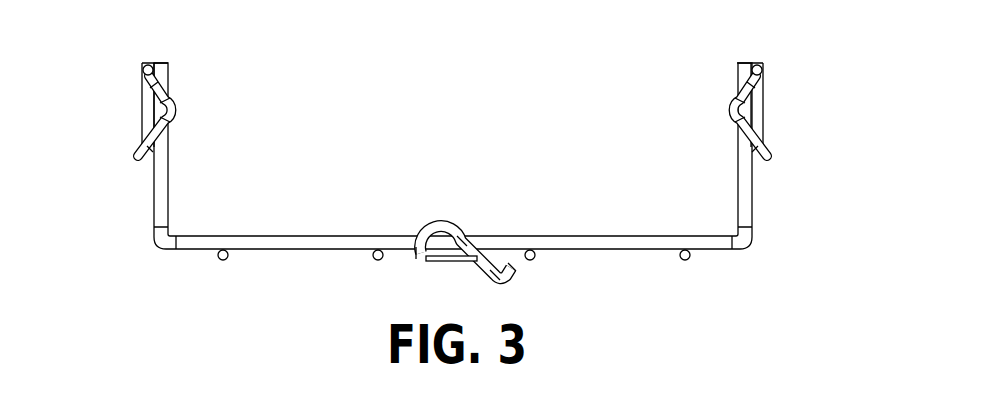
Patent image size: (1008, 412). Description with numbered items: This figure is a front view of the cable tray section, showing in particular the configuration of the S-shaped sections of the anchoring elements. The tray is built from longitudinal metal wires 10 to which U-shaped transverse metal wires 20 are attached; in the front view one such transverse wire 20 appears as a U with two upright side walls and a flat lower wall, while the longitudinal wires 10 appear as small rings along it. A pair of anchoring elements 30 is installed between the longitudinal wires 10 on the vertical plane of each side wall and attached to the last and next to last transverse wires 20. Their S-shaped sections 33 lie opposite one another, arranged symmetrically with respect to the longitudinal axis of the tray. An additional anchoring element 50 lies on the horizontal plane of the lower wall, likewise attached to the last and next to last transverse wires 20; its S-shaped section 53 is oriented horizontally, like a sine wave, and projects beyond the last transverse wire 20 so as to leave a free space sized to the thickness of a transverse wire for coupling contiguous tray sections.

The longitudinal metal wires 10 is at (135, 155).
The U-shaped transverse metal wires 20 is at (158, 199).
The anchoring elements 30 is at (180, 89).
The S-shaped sections 33 is at (173, 110).
The additional anchoring element 50 is at (472, 220).
The S-shaped section 53 is at (447, 228).